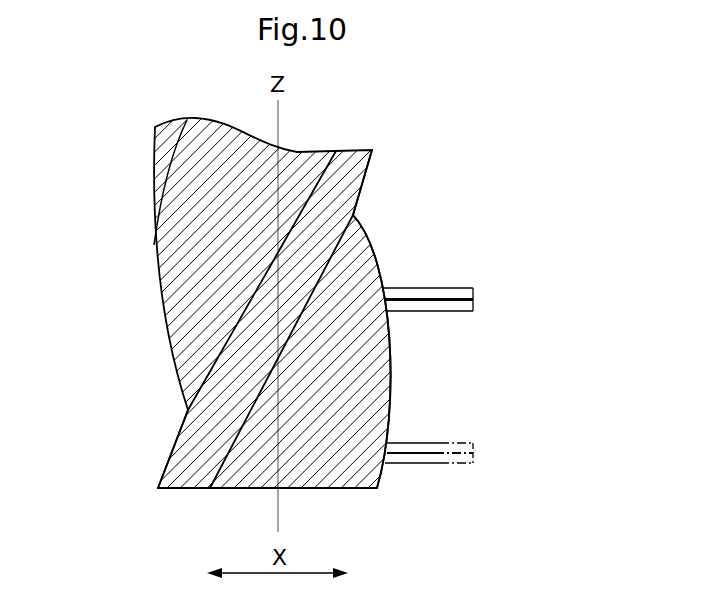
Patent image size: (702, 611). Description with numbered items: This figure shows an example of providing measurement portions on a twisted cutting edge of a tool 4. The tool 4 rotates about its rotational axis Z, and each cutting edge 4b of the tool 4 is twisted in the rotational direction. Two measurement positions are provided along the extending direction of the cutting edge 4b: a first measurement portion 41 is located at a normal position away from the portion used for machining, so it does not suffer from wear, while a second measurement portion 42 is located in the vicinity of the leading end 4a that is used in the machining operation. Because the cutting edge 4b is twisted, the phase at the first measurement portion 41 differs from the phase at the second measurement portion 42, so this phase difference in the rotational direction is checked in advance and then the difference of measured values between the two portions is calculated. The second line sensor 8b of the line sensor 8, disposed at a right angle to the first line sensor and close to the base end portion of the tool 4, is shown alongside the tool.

The tool 4 is at (152, 170).
The leading end 4a is at (233, 490).
The cutting edge 4b is at (322, 250).
The first measurement portion 41 is at (278, 299).
The second measurement portion 42 is at (198, 453).
The second line sensor 8b is at (430, 295).
The line sensor 8 is at (472, 379).